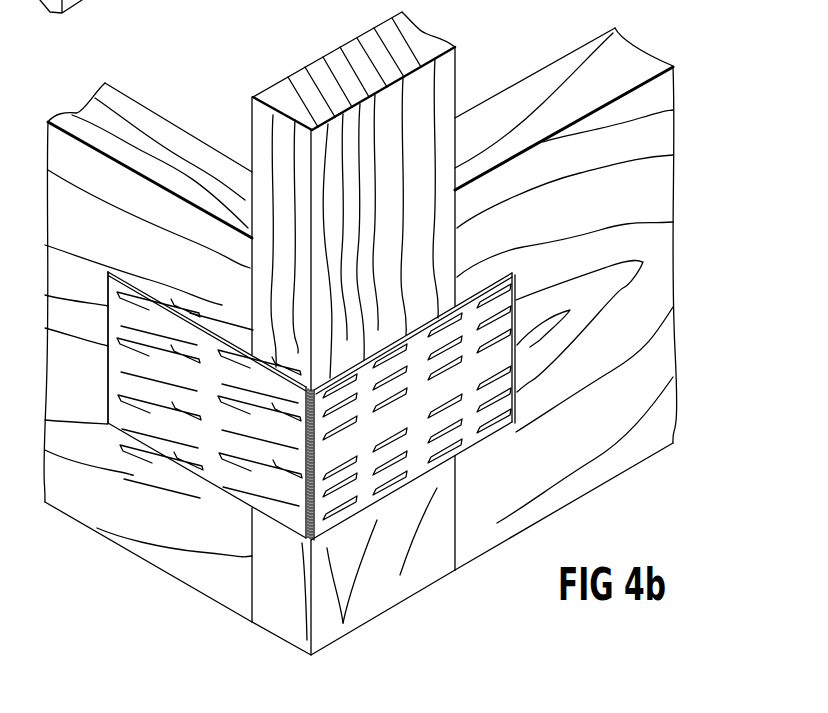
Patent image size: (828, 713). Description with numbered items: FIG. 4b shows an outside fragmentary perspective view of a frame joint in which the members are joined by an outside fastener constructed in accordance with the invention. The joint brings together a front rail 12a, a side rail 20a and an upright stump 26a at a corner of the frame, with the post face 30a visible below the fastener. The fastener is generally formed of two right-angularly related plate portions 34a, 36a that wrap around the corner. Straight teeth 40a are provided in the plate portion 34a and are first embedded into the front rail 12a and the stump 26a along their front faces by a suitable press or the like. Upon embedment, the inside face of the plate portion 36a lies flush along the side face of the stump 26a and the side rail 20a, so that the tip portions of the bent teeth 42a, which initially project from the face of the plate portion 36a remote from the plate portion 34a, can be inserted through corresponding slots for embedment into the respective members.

The front rail 12a is at (647, 200).
The side rail 20a is at (167, 143).
The stump 26a is at (340, 68).
The post corner face 30a is at (397, 543).
The plate portion 34a is at (393, 343).
The plate portion 36a is at (173, 307).
The straight teeth 40a is at (350, 377).
The bent teeth 42a is at (108, 308).